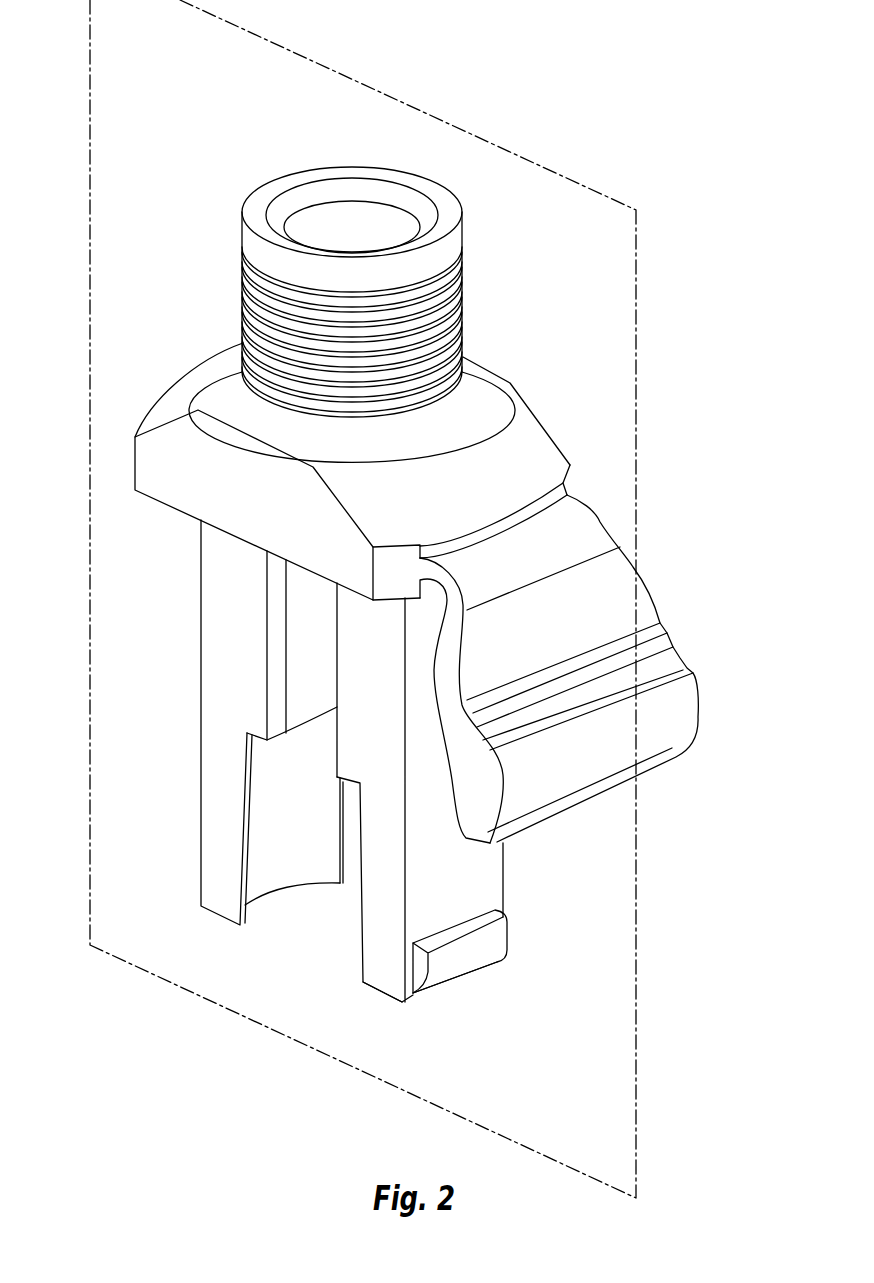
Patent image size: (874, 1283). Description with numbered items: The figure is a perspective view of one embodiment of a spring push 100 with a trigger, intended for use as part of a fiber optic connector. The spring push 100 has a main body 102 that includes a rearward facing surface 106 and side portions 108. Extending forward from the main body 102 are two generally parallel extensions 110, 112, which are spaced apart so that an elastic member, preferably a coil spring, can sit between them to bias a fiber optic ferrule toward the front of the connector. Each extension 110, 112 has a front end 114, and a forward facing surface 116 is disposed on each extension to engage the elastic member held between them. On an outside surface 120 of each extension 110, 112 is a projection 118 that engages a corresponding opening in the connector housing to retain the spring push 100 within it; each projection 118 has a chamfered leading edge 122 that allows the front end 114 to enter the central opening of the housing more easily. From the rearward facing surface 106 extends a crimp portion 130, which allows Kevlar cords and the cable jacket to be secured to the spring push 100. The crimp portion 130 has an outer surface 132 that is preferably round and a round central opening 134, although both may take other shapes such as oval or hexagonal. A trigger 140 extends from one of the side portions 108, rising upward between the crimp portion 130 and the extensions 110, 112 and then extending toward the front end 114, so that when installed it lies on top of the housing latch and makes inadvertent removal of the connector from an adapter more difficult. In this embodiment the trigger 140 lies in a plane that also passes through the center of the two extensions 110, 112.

The spring push 100 is at (720, 226).
The main body 102 is at (353, 666).
The rearward facing surface 106 is at (212, 377).
The side portions 108 is at (563, 467).
The generally parallel extension 110 is at (212, 853).
The generally parallel extension 112 is at (464, 832).
The front end 114 is at (390, 997).
The forward facing surface 116 is at (273, 740).
The projection 118 is at (500, 932).
The outside surface 120 is at (493, 862).
The chamfered leading edge 122 is at (460, 980).
The crimp portion 130 is at (231, 137).
The outer surface 132 is at (465, 297).
The central opening 134 is at (355, 218).
The trigger 140 is at (700, 714).